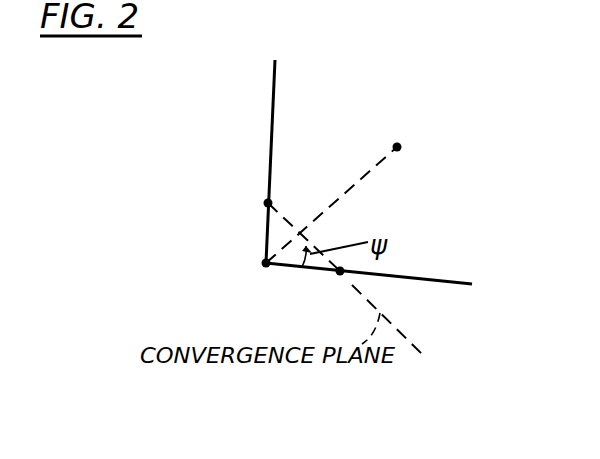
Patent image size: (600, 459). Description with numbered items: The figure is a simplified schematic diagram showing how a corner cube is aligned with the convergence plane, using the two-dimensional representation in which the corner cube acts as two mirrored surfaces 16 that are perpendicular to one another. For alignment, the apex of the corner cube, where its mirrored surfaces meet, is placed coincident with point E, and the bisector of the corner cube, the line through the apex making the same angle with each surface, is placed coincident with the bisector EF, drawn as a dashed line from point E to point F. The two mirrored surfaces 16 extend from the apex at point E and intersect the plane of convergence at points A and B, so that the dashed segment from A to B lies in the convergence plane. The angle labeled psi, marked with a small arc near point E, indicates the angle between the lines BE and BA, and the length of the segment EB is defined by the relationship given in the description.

The coordinate axes 16 is at (268, 131).
The point A is at (265, 204).
The point B is at (336, 275).
The point E is at (260, 268).
The point F is at (409, 148).